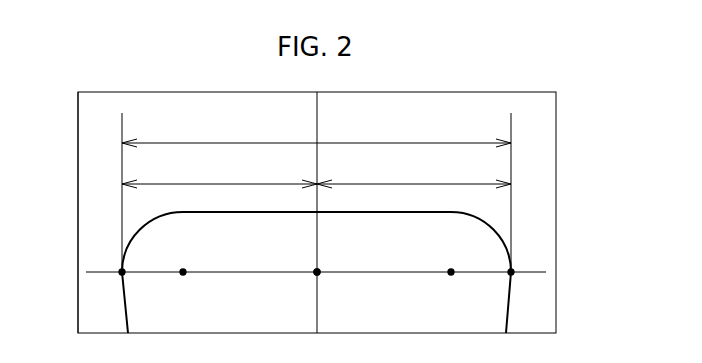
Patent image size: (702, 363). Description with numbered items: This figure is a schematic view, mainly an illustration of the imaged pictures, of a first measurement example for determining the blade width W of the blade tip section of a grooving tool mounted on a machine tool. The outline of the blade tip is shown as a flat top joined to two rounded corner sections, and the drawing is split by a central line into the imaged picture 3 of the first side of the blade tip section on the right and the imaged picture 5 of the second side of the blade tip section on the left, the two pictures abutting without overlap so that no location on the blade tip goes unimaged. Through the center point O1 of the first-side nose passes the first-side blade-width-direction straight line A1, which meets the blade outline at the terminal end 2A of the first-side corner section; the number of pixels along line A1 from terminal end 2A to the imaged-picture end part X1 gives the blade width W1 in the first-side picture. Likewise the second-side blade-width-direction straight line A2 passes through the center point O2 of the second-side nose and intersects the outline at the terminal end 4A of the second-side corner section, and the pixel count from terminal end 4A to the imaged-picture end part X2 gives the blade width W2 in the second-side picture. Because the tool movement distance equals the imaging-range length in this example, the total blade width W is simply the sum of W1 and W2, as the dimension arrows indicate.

The imaged picture of the first side of the blade tip section 3 is at (557, 153).
The imaged picture of the second side of the blade tip section 5 is at (78, 138).
The terminal end of the first-side corner section 2A is at (513, 274).
The terminal end of the second-side corner section 4A is at (117, 279).
The first-side blade-width-direction straight line A1 is at (478, 276).
The second-side blade-width-direction straight line A2 is at (240, 275).
The center point of the first-side nose R O1 is at (447, 276).
The center point of the second-side nose R O2 is at (178, 279).
The imaged-picture end part of the first-side picture X1 is at (320, 268).
The imaged-picture end part of the second-side picture X2 is at (314, 269).
The blade width W is at (316, 134).
The blade width in the imaged picture of the first side W1 is at (414, 175).
The blade width in the imaged picture of the second side W2 is at (219, 175).